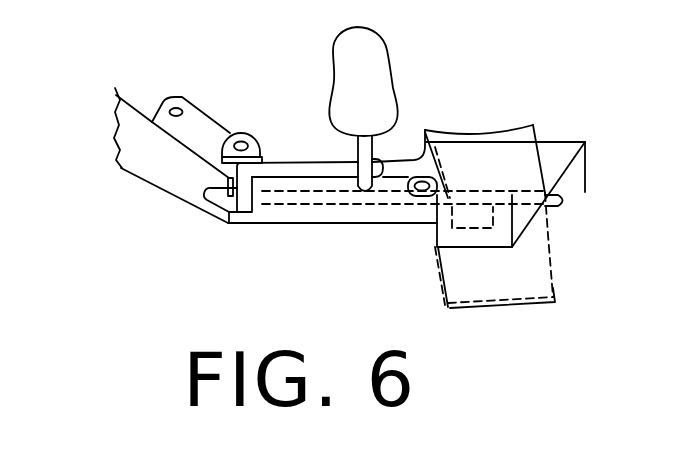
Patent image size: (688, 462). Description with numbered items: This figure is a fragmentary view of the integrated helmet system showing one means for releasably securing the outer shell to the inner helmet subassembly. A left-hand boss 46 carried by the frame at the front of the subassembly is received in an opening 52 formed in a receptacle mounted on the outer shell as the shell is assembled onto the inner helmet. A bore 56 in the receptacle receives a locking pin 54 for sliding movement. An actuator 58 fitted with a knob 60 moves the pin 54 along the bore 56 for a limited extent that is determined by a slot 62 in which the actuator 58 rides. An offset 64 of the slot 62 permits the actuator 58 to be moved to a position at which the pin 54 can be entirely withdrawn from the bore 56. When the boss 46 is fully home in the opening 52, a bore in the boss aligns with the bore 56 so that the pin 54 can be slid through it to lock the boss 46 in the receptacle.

The left-hand boss 46 is at (534, 127).
The opening 52 is at (432, 176).
The locking pin 54 is at (556, 201).
The bore 56 is at (310, 205).
The actuator 58 is at (358, 150).
The knob 60 is at (377, 70).
The slot 62 is at (273, 172).
The offset 64 is at (243, 203).